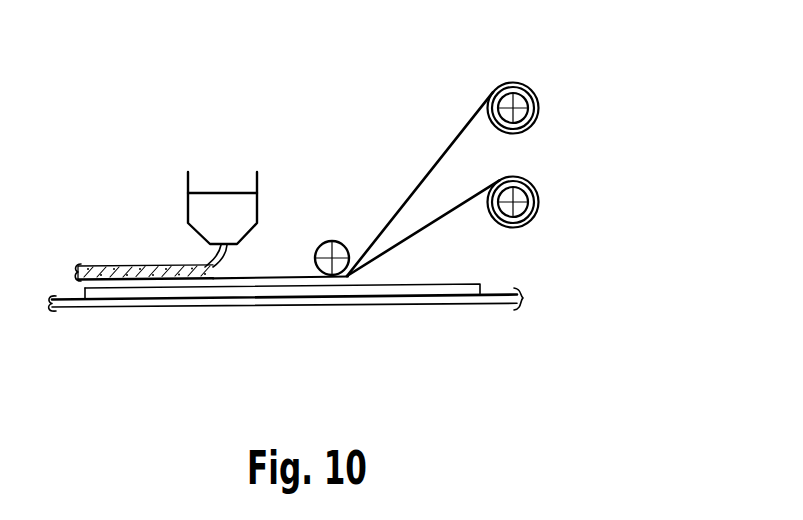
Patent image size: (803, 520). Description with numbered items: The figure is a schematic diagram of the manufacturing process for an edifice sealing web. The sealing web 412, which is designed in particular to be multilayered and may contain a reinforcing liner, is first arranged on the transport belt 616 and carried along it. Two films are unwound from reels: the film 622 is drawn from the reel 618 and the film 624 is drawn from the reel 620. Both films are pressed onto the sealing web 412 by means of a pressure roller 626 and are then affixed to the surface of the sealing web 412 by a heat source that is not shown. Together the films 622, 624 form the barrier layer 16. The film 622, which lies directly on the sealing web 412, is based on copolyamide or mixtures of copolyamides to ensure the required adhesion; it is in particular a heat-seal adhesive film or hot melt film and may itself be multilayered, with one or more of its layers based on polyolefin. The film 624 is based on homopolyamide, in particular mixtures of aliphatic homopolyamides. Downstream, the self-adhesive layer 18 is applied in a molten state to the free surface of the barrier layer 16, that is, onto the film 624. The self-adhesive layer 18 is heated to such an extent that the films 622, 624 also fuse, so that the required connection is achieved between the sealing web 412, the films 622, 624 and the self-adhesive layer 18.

The self-adhesive layer 18 is at (128, 267).
The barrier layer 16 is at (275, 276).
The pressure roller 626 is at (341, 241).
The film 624 is at (457, 130).
The film 622 is at (438, 212).
The reel 620 is at (539, 108).
The reel 618 is at (540, 200).
The sealing web 412 is at (453, 290).
The transport belt 616 is at (458, 304).